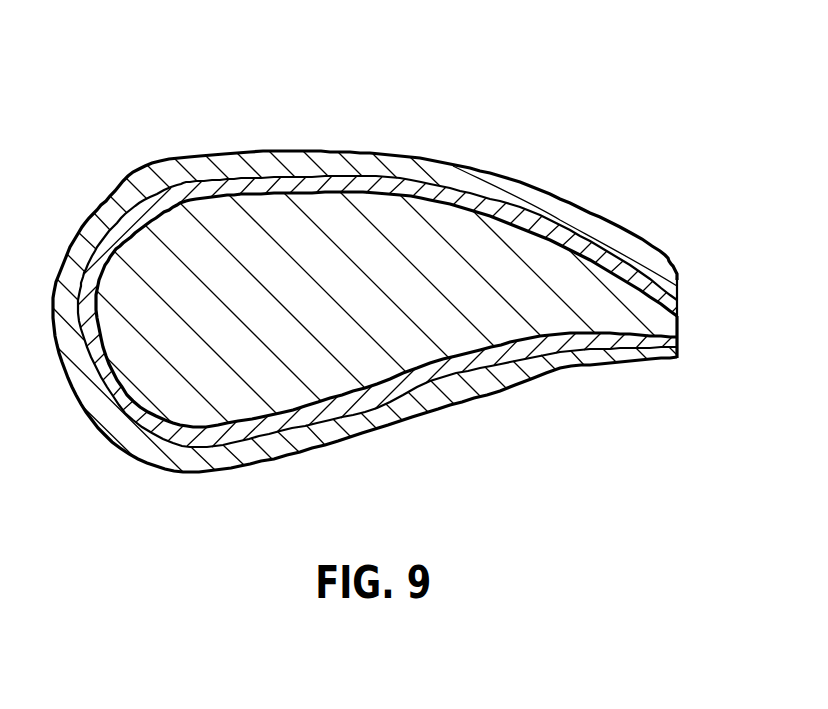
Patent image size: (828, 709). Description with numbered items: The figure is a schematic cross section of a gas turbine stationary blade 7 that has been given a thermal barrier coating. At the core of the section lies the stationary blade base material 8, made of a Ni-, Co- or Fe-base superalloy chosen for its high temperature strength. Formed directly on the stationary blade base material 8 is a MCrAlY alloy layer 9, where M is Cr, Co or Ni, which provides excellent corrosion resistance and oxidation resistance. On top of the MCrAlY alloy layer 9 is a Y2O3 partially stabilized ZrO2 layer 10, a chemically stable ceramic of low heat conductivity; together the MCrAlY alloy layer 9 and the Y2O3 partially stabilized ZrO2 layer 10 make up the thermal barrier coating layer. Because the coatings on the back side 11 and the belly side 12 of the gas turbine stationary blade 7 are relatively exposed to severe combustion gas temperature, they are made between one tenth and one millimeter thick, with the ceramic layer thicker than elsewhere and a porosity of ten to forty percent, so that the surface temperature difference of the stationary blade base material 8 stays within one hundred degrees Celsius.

The gas turbine stationary blade 7 is at (568, 181).
The stationary blade base material 8 is at (422, 218).
The MCrAlY alloy layer 9 is at (288, 178).
The Y2O3 partially stabilized ZrO2 layer 10 is at (377, 420).
The back side 11 is at (226, 130).
The belly side 12 is at (484, 406).